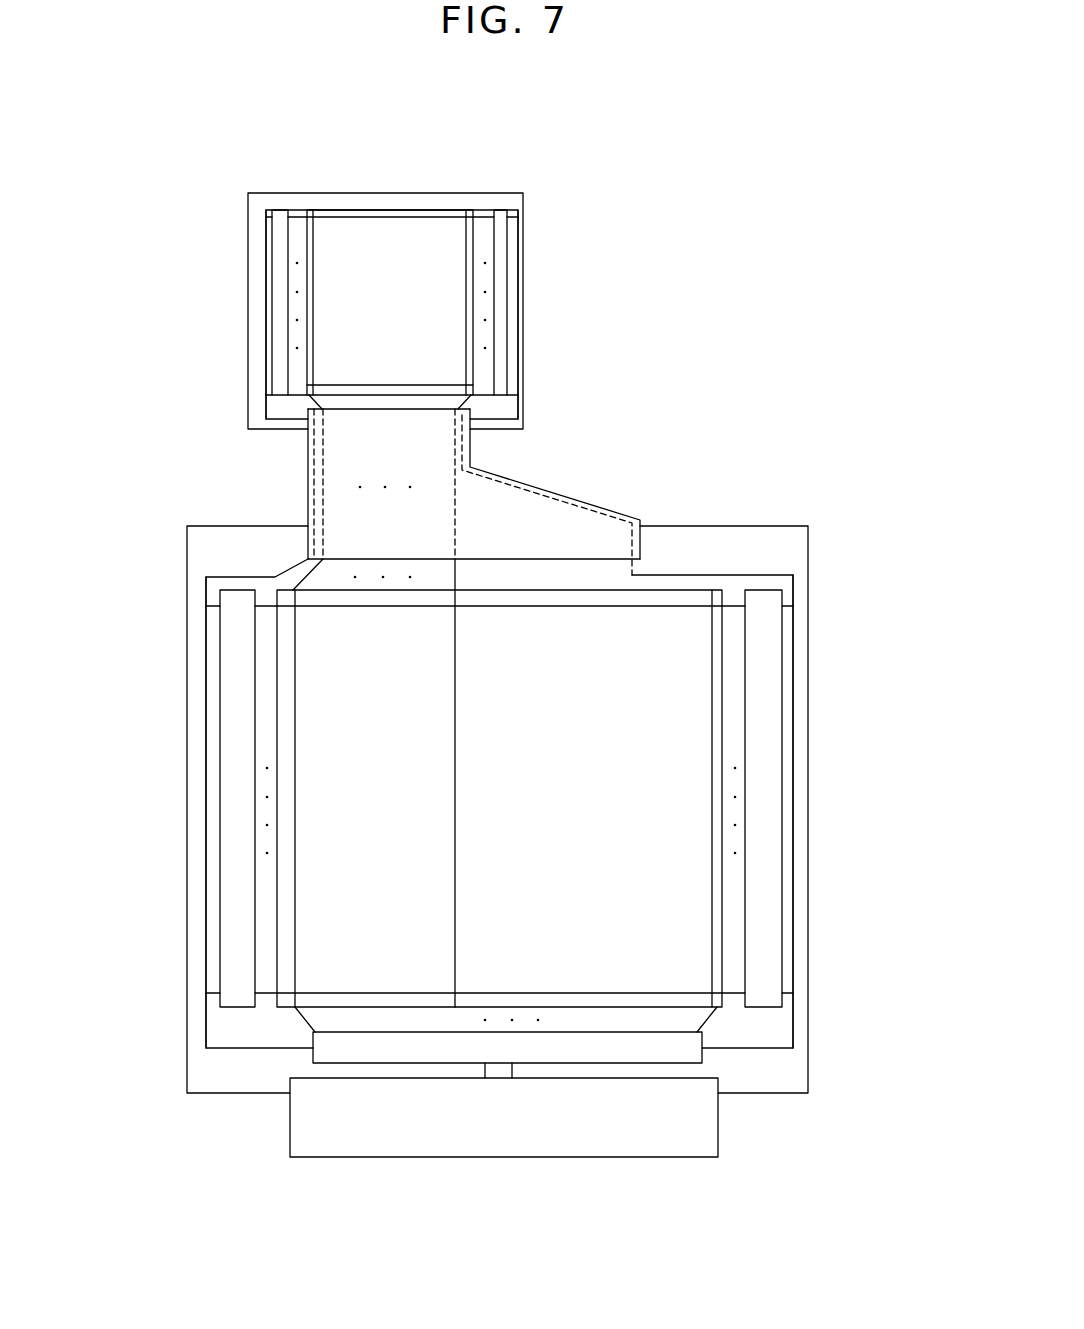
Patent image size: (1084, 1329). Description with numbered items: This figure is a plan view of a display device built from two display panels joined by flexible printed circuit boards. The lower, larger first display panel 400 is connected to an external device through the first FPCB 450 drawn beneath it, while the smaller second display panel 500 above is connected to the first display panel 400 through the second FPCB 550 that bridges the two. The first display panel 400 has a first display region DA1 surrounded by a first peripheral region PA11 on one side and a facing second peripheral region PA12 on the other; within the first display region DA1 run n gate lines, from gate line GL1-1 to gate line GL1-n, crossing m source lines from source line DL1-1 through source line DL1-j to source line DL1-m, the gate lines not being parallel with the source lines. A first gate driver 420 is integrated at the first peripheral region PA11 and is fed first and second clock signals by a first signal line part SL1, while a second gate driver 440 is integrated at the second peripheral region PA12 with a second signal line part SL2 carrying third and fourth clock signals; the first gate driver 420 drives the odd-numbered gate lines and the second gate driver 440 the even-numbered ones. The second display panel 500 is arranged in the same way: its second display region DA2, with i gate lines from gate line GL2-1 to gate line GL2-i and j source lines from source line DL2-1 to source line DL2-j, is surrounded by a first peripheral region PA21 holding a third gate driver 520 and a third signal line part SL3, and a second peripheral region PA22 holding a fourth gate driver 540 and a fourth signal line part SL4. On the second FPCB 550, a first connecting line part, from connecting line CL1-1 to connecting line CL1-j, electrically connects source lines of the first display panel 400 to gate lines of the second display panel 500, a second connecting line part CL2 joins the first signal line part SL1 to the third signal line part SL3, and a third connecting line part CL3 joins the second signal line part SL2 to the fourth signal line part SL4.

The second display panel 500 is at (452, 193).
The fourth gate driver 540 is at (272, 242).
The third gate driver 520 is at (500, 243).
The second FPCB 550 is at (633, 517).
The first display panel 400 is at (200, 838).
The second gate driver 440 is at (228, 755).
The first gate driver 420 is at (763, 705).
The first FPCB 450 is at (718, 1122).
The first display region DA1 is at (475, 705).
The second display region DA2 is at (334, 228).
The first peripheral region PA11 is at (797, 1075).
The second peripheral region PA12 is at (195, 632).
The first peripheral region PA21 is at (512, 403).
The second peripheral region PA22 is at (272, 405).
The first signal line part SL1 is at (793, 773).
The second signal line part SL2 is at (210, 960).
The third signal line part SL3 is at (519, 293).
The fourth signal line part SL4 is at (264, 285).
The gate line GL1-1 is at (535, 993).
The gate line GL1-n is at (530, 606).
The gate line GL2-1 is at (412, 384).
The gate line GL2-i is at (400, 218).
The source line DL1-1 is at (297, 826).
The source line DL1-j is at (457, 826).
The source line DL1-m is at (712, 826).
The source line DL2-1 is at (315, 303).
The source line DL2-j is at (466, 253).
The first connecting line part CL1-1 is at (308, 497).
The first connecting line part CL1-j is at (457, 487).
The second connecting line part CL2 is at (583, 502).
The third connecting line part CL3 is at (314, 447).